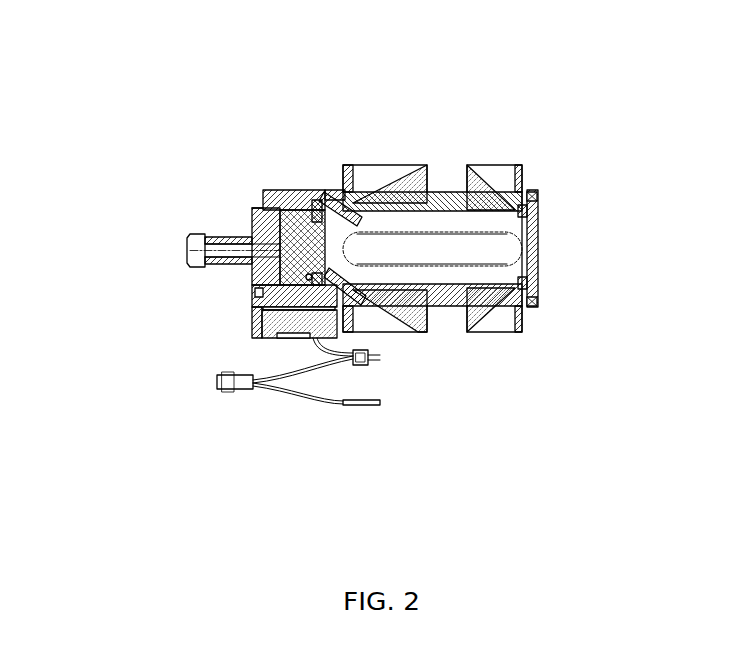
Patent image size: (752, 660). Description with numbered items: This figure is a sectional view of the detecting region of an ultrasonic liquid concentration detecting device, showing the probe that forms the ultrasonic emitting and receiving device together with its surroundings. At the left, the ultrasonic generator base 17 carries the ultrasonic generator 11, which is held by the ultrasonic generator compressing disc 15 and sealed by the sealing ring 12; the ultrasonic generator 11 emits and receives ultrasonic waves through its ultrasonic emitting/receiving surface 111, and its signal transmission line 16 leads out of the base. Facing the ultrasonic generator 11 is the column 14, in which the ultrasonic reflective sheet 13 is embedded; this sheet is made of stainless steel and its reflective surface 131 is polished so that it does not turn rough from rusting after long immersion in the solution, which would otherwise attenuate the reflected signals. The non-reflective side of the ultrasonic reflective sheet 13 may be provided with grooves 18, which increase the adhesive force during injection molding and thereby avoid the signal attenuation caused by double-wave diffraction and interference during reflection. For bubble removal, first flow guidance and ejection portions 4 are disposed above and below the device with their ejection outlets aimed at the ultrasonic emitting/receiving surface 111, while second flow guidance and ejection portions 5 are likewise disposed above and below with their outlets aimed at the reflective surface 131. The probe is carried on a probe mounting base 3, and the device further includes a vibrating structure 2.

The vibrating structure 2 is at (310, 403).
The probe mounting base 3 is at (278, 323).
The first flow guidance and ejection portion 4 is at (377, 320).
The second flow guidance and ejection portion 5 is at (508, 297).
The ultrasonic generator 11 is at (297, 245).
The sealing ring 12 is at (316, 222).
The ultrasonic reflective sheet 13 is at (537, 285).
The column 14 is at (447, 307).
The ultrasonic generator compressing disc 15 is at (318, 199).
The signal transmission line 16 is at (187, 250).
The ultrasonic generator base 17 is at (282, 293).
The grooves 18 is at (537, 260).
The ultrasonic emitting/receiving surface 111 is at (325, 247).
The reflective surface 131 is at (530, 232).